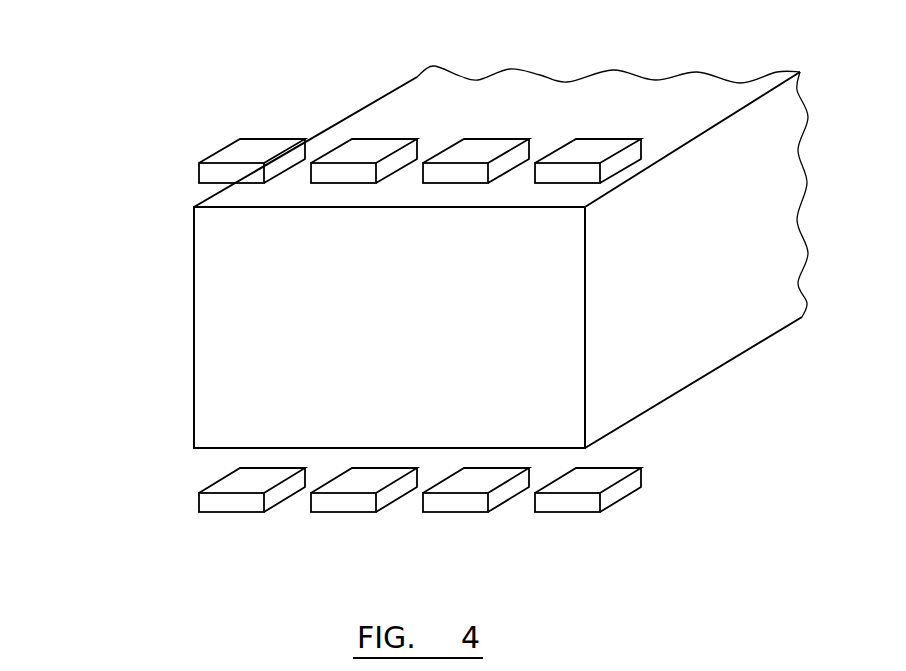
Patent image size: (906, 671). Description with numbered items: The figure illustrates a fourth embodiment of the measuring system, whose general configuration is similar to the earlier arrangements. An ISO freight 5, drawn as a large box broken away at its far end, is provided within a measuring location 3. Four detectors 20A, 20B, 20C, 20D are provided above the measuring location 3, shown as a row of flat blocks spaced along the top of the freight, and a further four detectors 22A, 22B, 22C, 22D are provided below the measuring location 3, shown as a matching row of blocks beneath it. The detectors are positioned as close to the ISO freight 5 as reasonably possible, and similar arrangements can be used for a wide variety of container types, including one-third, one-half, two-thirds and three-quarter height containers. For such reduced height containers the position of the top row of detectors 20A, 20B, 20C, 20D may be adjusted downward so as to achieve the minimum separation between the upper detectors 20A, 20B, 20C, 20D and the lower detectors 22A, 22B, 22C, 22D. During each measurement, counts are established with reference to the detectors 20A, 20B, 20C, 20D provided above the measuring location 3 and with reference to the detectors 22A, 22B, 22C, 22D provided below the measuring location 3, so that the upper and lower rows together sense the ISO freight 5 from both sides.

The measuring location 3 is at (193, 316).
The ISO freight 5 is at (682, 328).
The detector 20A is at (243, 152).
The detector 20B is at (365, 152).
The detector 20C is at (480, 150).
The detector 20D is at (592, 150).
The detector 22A is at (230, 512).
The detector 22B is at (340, 512).
The detector 22C is at (453, 512).
The detector 22D is at (565, 512).